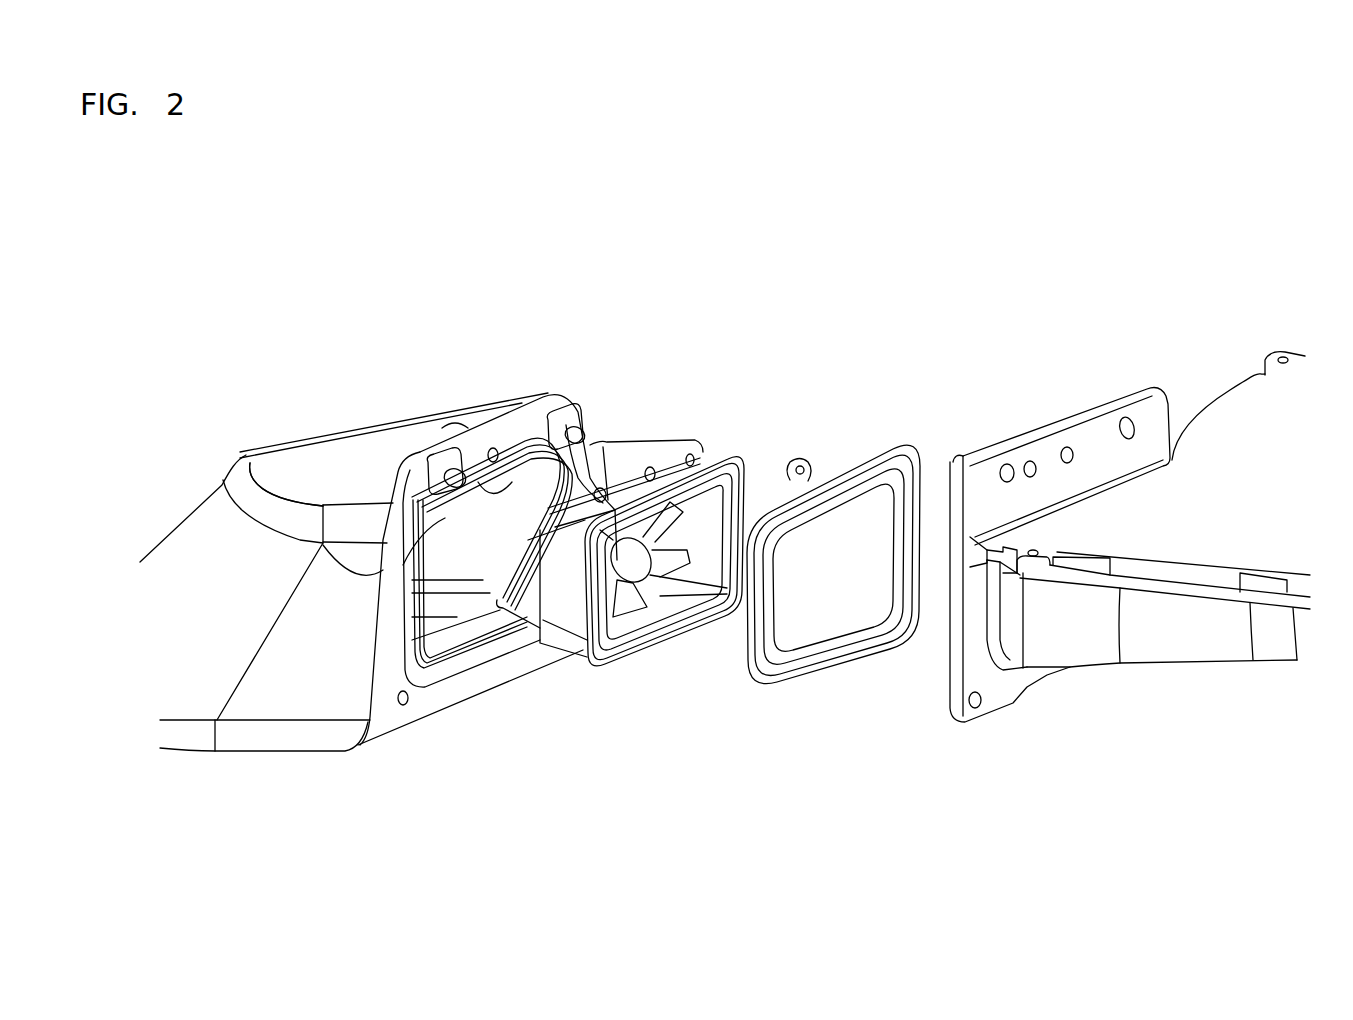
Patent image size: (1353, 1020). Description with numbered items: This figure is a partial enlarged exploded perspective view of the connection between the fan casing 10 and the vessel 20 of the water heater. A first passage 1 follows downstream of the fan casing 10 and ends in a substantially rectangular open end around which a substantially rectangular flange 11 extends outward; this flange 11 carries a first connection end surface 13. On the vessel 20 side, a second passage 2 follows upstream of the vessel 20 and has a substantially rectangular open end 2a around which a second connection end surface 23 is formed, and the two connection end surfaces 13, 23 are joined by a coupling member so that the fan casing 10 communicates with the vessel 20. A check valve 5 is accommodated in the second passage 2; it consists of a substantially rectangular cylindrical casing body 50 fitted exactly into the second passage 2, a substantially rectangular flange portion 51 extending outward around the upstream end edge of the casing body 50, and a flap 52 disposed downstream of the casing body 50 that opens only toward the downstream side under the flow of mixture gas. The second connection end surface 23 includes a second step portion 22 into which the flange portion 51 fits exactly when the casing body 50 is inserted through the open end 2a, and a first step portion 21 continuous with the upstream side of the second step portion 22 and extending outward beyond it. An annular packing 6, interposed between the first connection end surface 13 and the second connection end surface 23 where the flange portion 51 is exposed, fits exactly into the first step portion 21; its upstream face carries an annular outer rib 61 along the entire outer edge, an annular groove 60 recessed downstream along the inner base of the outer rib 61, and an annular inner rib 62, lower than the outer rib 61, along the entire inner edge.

The first passage 1 is at (1100, 630).
The second passage 2 is at (371, 441).
The substantially rectangular open end 2a is at (516, 555).
The check valve 5 is at (646, 552).
The annular packing 6 is at (839, 563).
The fan casing 10 is at (1130, 510).
The substantially rectangular flange 11 is at (1147, 431).
The first connection end surface 13 is at (1051, 420).
The vessel 20 is at (167, 673).
The first step portion 21 is at (519, 448).
The second step portion 22 is at (358, 562).
The second connection end surface 23 is at (488, 444).
The casing body 50 is at (567, 613).
The flange portion 51 is at (708, 470).
The flap 52 is at (515, 572).
The annular groove 60 is at (803, 668).
The annular outer rib 61 is at (865, 652).
The annular inner rib 62 is at (858, 493).